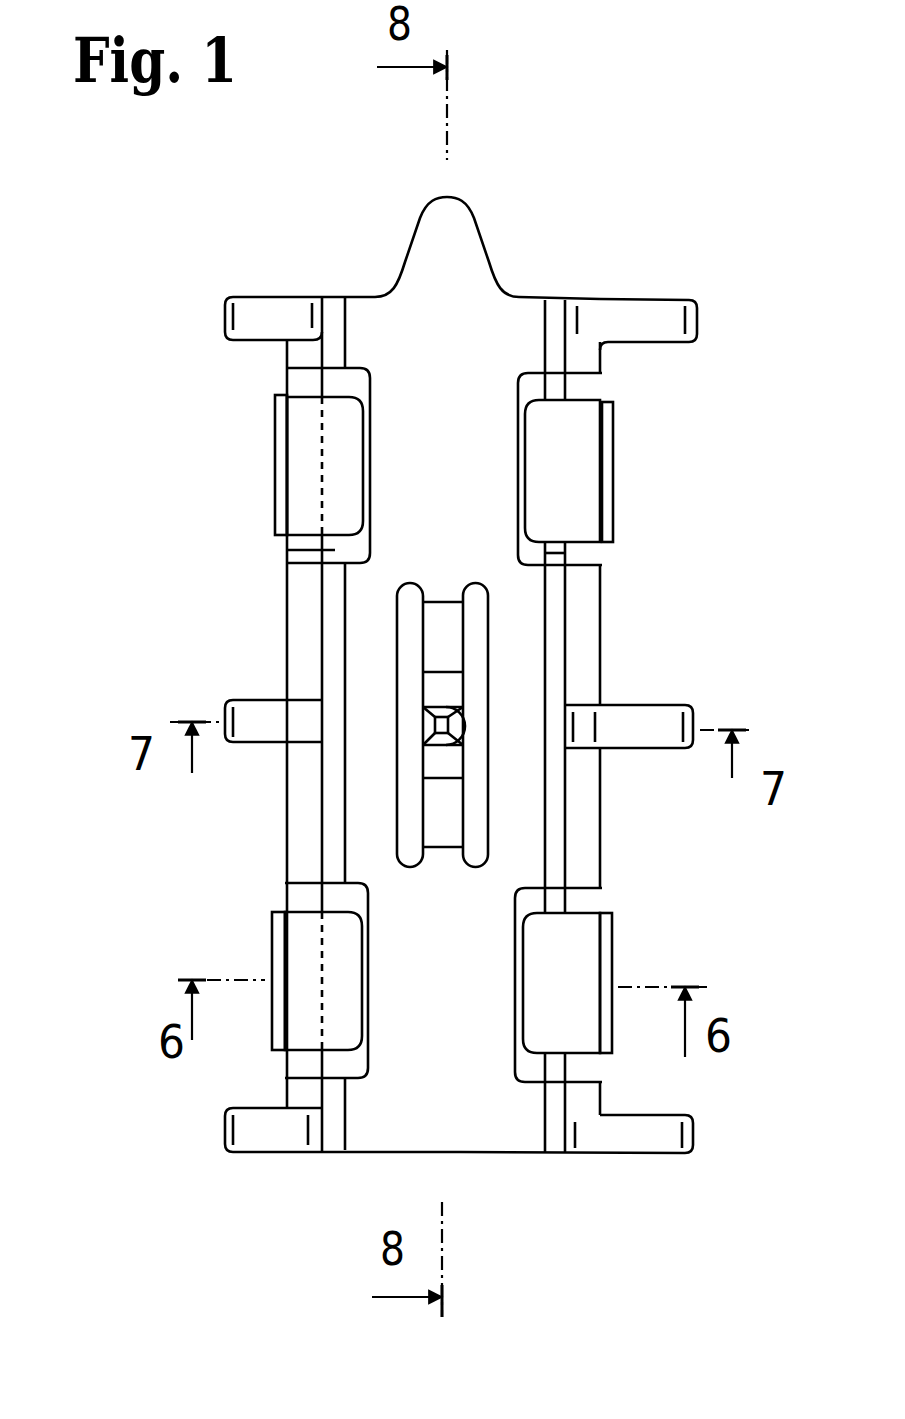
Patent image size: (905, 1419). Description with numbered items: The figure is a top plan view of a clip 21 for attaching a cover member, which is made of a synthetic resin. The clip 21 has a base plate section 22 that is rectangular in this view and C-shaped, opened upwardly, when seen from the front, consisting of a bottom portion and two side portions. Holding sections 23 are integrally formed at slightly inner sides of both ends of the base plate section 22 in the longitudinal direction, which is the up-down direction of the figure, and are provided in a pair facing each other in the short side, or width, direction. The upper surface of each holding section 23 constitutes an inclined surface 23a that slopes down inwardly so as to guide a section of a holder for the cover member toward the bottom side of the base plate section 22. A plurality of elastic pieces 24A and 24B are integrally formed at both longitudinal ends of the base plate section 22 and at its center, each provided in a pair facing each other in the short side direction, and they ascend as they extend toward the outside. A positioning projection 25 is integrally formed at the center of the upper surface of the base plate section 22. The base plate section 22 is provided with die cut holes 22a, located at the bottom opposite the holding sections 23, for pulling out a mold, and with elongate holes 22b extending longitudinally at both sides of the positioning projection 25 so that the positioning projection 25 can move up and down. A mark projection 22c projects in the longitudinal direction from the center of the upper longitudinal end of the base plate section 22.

The clip 21 is at (280, 268).
The base plate section 22 is at (448, 1096).
The die cut holes 22a is at (335, 548).
The elongate holes 22b is at (412, 632).
The mark projection 22c is at (452, 238).
The holding sections 23 is at (273, 414).
The inclined surface 23a is at (350, 462).
The elastic pieces 24A is at (250, 312).
The elastic pieces 24B is at (652, 325).
The positioning projection 25 is at (447, 735).